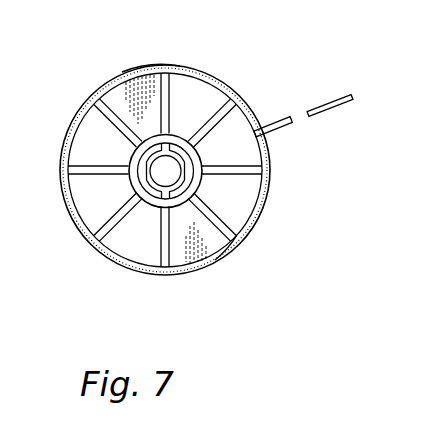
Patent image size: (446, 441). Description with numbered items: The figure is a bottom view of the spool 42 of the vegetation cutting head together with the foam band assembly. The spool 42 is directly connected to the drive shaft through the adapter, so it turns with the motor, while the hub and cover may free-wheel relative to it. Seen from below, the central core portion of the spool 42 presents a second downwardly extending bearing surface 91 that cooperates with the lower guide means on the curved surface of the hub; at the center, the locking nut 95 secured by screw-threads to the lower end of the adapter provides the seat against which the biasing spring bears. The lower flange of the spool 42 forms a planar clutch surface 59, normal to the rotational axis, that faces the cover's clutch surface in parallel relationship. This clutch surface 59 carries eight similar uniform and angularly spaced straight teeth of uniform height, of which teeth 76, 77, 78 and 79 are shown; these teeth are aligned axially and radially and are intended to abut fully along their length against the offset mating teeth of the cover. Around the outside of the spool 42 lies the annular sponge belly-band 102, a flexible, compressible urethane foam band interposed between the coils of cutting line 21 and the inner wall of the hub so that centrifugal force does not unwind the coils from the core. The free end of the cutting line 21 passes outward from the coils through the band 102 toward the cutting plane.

The spool 42 is at (247, 79).
The annular sponge belly-band 102 is at (121, 72).
The tooth 76 is at (172, 94).
The tooth 79 is at (102, 118).
The tooth 78 is at (112, 217).
The planar clutch surface 59 is at (238, 220).
The tooth 77 is at (216, 242).
The second downwardly extending bearing surface 91 is at (150, 204).
The locking nut 95 is at (184, 182).
The cutting line 21 is at (285, 118).